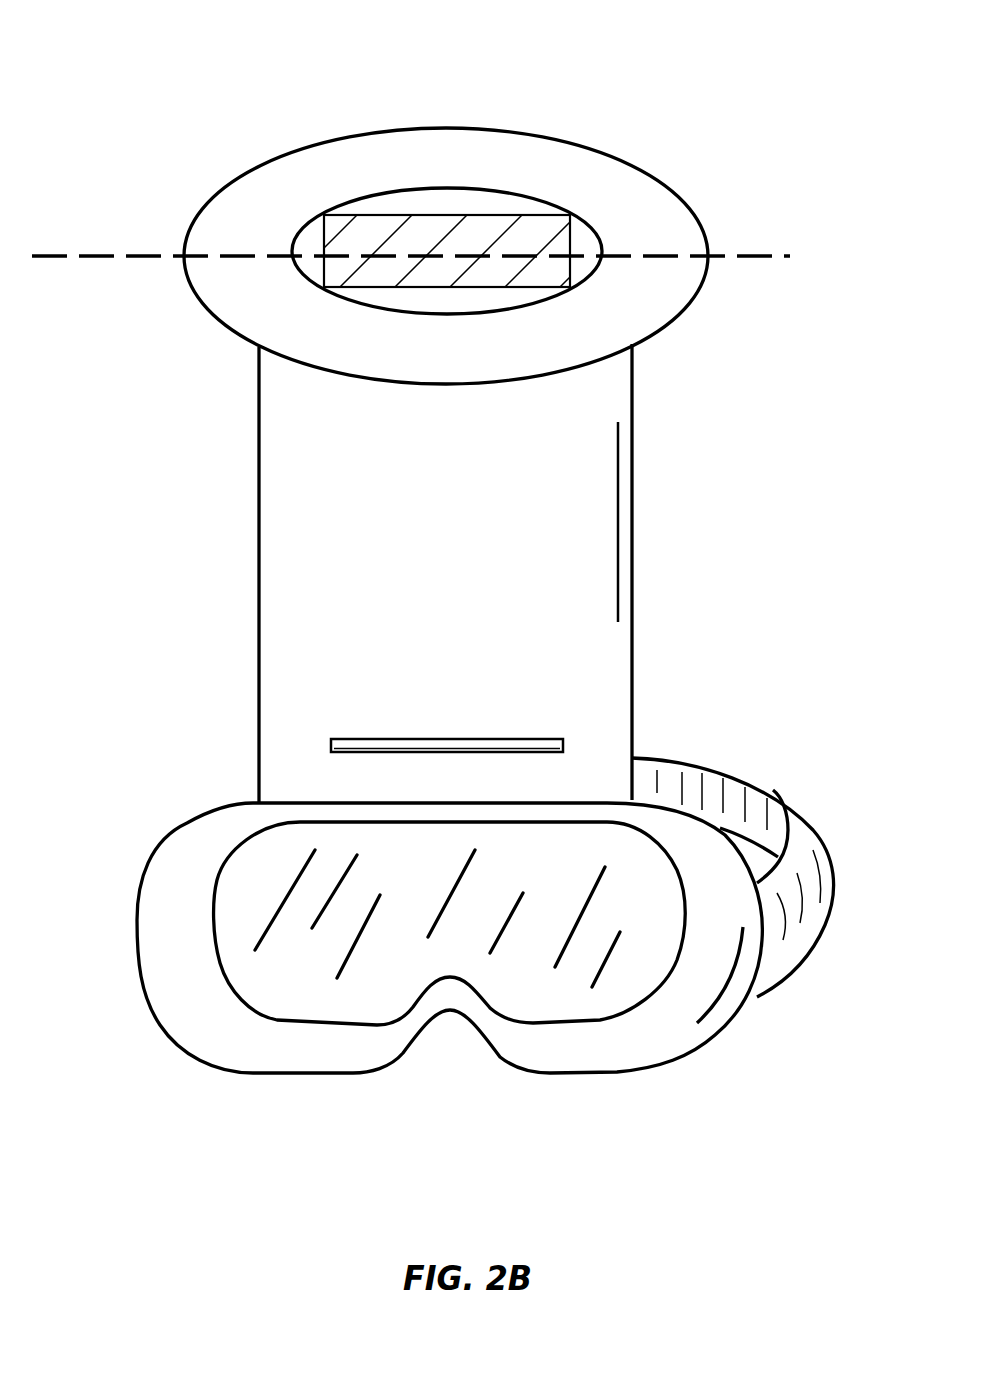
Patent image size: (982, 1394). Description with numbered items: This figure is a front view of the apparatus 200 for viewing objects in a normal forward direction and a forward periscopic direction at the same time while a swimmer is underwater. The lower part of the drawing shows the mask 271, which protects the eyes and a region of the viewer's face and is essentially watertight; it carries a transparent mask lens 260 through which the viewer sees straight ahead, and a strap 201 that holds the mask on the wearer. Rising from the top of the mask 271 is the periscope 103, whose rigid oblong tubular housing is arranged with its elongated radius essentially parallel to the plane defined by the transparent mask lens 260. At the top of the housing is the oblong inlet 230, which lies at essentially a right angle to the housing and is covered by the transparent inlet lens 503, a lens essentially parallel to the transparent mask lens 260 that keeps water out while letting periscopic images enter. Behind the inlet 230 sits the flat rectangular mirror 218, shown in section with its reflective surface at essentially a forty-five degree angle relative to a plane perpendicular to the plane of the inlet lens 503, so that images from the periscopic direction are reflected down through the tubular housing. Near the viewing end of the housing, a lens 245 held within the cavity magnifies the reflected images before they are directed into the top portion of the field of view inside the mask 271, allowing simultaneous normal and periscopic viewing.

The apparatus 200 is at (238, 91).
The mask 271 is at (293, 257).
The flat rectangular mirror 218 is at (570, 215).
The transparent inlet lens 503 is at (443, 248).
The oblong inlet 230 is at (642, 343).
The periscope 103 is at (702, 614).
The lens 245 is at (523, 737).
The strap 201 is at (807, 953).
The transparent mask lens 260 is at (633, 1012).